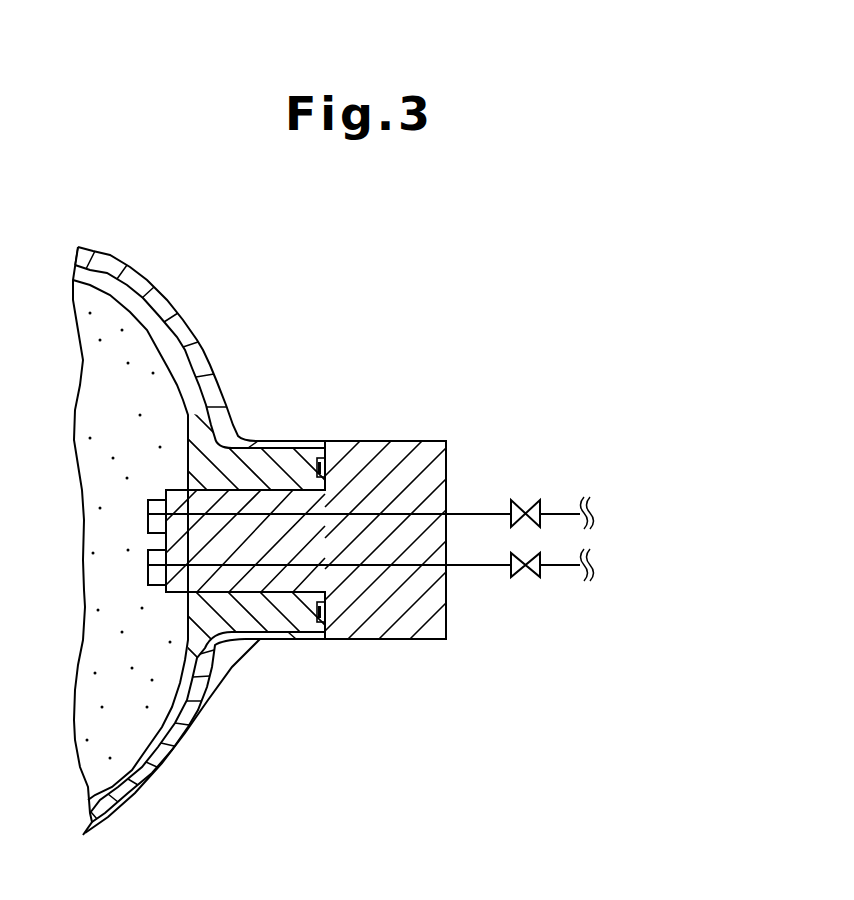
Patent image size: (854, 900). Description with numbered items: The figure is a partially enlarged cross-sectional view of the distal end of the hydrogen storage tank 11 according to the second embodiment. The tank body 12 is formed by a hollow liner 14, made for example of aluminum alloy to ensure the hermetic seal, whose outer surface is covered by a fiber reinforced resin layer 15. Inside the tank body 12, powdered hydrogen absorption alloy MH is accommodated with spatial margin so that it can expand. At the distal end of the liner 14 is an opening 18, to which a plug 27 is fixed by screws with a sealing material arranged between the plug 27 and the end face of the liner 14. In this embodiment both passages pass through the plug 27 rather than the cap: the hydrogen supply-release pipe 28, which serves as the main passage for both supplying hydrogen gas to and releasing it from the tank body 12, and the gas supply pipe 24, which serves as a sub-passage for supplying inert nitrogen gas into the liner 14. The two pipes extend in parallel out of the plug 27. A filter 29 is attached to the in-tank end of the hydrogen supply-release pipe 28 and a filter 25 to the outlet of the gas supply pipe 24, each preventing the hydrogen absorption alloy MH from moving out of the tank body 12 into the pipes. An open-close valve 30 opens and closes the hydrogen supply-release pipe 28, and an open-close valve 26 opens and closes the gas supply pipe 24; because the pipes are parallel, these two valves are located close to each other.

The hydrogen storage tank 11 is at (334, 511).
The tank body 12 is at (201, 332).
The liner 14 is at (117, 265).
The fiber reinforced resin layer 15 is at (213, 372).
The opening 18 is at (288, 491).
The gas supply pipe 24 is at (407, 565).
The filter 25 is at (148, 563).
The open-close valve 26 is at (532, 579).
The plug 27 is at (340, 649).
The hydrogen supply-release pipe 28 is at (392, 510).
The filter 29 is at (148, 513).
The open-close valve 30 is at (532, 501).
The hydrogen absorption alloy MH is at (132, 406).